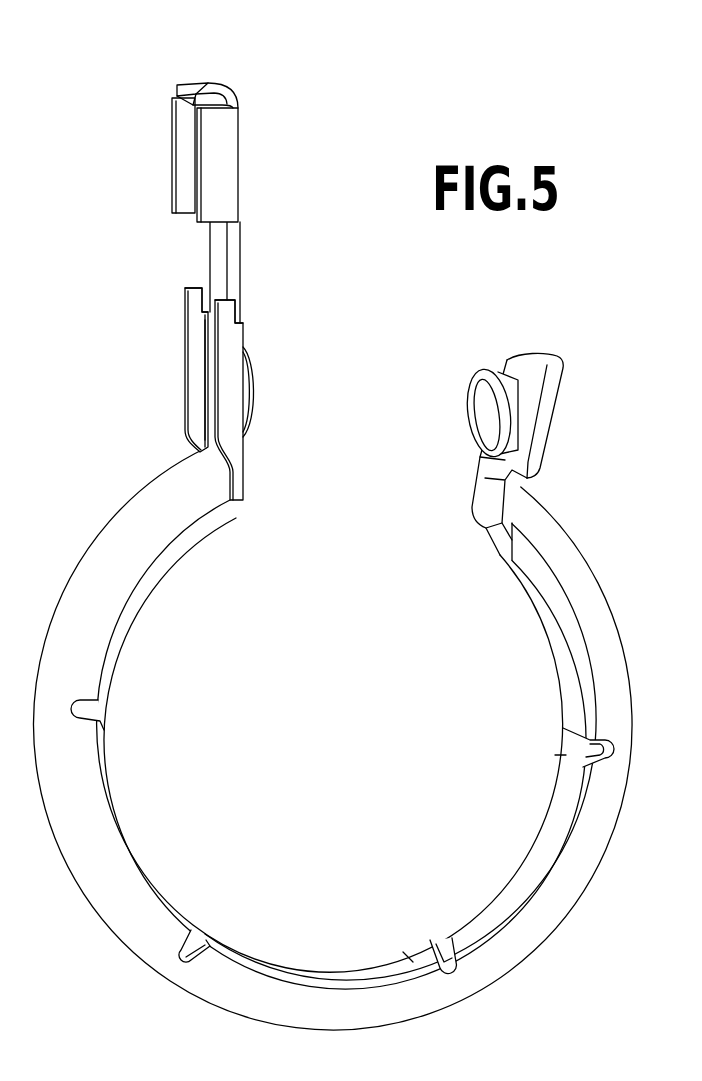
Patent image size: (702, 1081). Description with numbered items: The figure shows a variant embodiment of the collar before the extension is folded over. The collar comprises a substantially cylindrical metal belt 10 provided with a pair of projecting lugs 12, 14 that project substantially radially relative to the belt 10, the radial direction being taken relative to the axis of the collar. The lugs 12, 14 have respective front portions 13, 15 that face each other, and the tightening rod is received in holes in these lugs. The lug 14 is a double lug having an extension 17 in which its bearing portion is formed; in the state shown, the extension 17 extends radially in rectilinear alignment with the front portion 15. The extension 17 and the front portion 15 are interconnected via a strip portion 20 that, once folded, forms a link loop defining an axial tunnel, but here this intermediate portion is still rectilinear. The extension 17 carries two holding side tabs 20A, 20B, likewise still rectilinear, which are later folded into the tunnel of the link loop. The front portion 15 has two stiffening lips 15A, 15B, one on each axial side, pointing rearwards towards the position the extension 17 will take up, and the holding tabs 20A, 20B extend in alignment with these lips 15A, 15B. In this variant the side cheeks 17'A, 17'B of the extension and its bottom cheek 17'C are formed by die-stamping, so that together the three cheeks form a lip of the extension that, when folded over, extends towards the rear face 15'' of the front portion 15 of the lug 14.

The metal belt 10 is at (560, 496).
The lug 12 is at (568, 347).
The front portion 13 is at (520, 370).
The lug 14 is at (235, 266).
The front portion 15 is at (273, 400).
The stiffening lip 15A is at (228, 403).
The stiffening lip 15B is at (157, 364).
The rear face 15'' is at (156, 380).
The extension 17 is at (216, 127).
The side cheek 17'A is at (260, 165).
The side cheek 17'B is at (142, 155).
The bottom cheek 17'C is at (207, 70).
The strip portion 20 is at (228, 272).
The holding side tab 20A is at (223, 310).
The holding side tab 20B is at (190, 290).